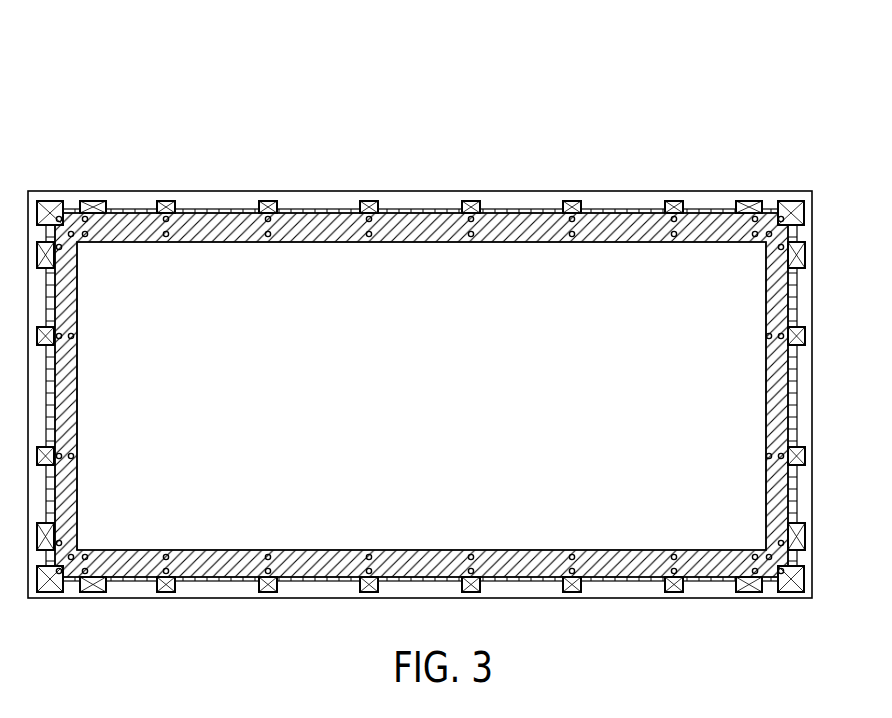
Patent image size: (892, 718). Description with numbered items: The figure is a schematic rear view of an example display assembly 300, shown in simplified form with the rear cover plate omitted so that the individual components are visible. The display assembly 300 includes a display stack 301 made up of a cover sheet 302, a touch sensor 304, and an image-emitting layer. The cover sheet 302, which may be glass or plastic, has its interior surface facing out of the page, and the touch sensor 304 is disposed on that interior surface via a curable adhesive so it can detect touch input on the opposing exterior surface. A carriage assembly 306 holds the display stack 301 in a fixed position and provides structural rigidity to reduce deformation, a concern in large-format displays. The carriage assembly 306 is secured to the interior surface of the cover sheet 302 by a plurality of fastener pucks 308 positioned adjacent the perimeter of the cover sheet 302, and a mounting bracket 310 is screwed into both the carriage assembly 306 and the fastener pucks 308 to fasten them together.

The display assembly 300 is at (429, 364).
The display stack 301 is at (421, 361).
The cover sheet 302 is at (421, 191).
The touch sensor 304 is at (522, 209).
The carriage assembly 306 is at (435, 405).
The fastener puck 308 is at (267, 212).
The mounting bracket 310 is at (198, 213).